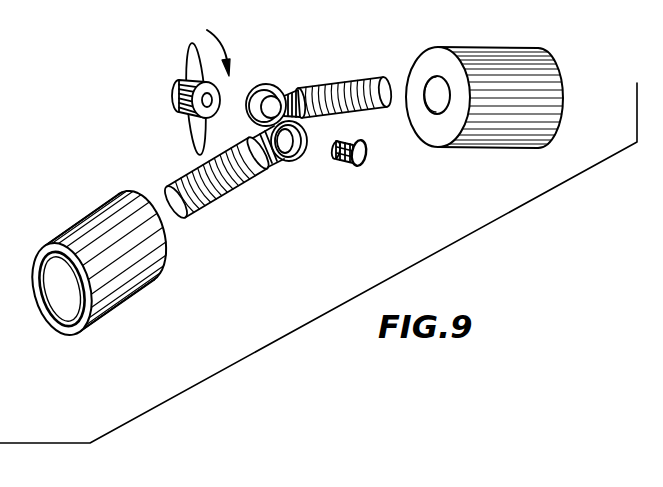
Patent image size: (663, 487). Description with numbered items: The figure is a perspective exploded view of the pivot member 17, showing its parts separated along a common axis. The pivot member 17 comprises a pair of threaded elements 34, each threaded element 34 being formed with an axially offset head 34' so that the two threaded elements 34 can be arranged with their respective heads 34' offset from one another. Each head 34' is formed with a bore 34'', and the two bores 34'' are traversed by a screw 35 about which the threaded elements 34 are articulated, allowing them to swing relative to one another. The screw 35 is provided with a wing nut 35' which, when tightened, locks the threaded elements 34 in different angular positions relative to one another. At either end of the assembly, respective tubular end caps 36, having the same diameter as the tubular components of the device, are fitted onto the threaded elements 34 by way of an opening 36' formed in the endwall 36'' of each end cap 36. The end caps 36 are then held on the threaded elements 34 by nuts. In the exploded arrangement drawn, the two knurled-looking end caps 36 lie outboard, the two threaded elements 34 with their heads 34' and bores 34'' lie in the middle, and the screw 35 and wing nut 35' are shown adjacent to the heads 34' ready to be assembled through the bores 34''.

The pivot member 17 is at (207, 42).
The threaded element 34 is at (277, 138).
The axially offset head 34' is at (282, 129).
The bore 34'' is at (295, 126).
The screw 35 is at (357, 181).
The wing nut 35' is at (170, 99).
The tubular end cap 36 is at (293, 196).
The opening 36' is at (428, 61).
The endwall 36'' is at (438, 126).